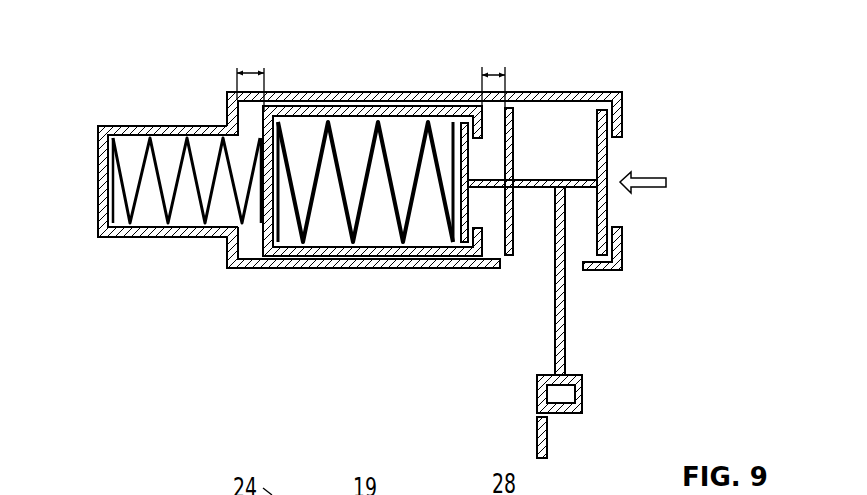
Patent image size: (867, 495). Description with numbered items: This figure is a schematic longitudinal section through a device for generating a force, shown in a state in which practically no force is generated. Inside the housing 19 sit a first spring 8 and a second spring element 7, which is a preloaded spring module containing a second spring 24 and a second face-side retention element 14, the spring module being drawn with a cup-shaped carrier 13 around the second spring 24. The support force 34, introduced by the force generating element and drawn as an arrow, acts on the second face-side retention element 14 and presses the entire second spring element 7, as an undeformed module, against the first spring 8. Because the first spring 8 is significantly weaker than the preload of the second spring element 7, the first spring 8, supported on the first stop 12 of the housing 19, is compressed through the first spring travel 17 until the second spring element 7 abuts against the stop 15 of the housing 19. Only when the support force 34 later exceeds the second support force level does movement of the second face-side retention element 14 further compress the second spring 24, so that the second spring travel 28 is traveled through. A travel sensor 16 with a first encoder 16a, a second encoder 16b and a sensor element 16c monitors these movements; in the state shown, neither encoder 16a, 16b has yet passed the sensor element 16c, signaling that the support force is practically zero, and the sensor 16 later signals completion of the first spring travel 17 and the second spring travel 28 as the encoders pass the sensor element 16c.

The second spring element 7 is at (376, 250).
The first spring 8 is at (140, 193).
The first stop 12 is at (98, 221).
The piston 13 is at (264, 240).
The second face-side retention element 14 is at (468, 205).
The stop 15 is at (227, 253).
The travel sensor 16 is at (574, 327).
The first encoder 16a is at (538, 397).
The second encoder 16b is at (583, 395).
The sensor element 16c is at (547, 440).
The first spring travel 17 is at (250, 71).
The housing 19 is at (390, 99).
The second spring 24 is at (345, 212).
The second spring travel 28 is at (498, 74).
The support force 34 is at (648, 177).